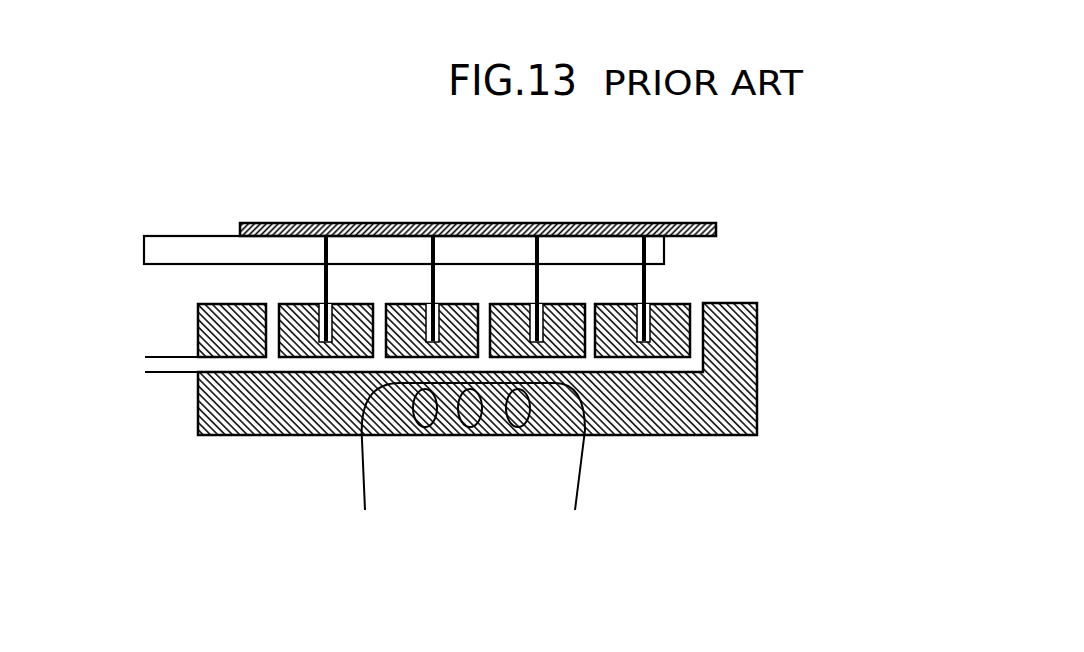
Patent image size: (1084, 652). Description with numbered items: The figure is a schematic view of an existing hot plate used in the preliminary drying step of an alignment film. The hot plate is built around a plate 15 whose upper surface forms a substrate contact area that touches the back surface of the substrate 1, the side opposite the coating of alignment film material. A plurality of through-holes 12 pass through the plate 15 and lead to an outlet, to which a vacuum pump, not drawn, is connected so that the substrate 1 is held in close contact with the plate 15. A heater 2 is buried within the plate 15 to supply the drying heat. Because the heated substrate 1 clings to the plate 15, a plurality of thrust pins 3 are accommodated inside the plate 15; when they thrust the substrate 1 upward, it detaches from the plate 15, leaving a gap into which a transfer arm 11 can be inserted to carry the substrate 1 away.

The substrate 1 is at (670, 227).
The heater 2 is at (368, 493).
The thrust pins 3 is at (640, 277).
The transfer arm 11 is at (657, 247).
The through-holes 12 is at (697, 312).
The plate 15 is at (750, 387).